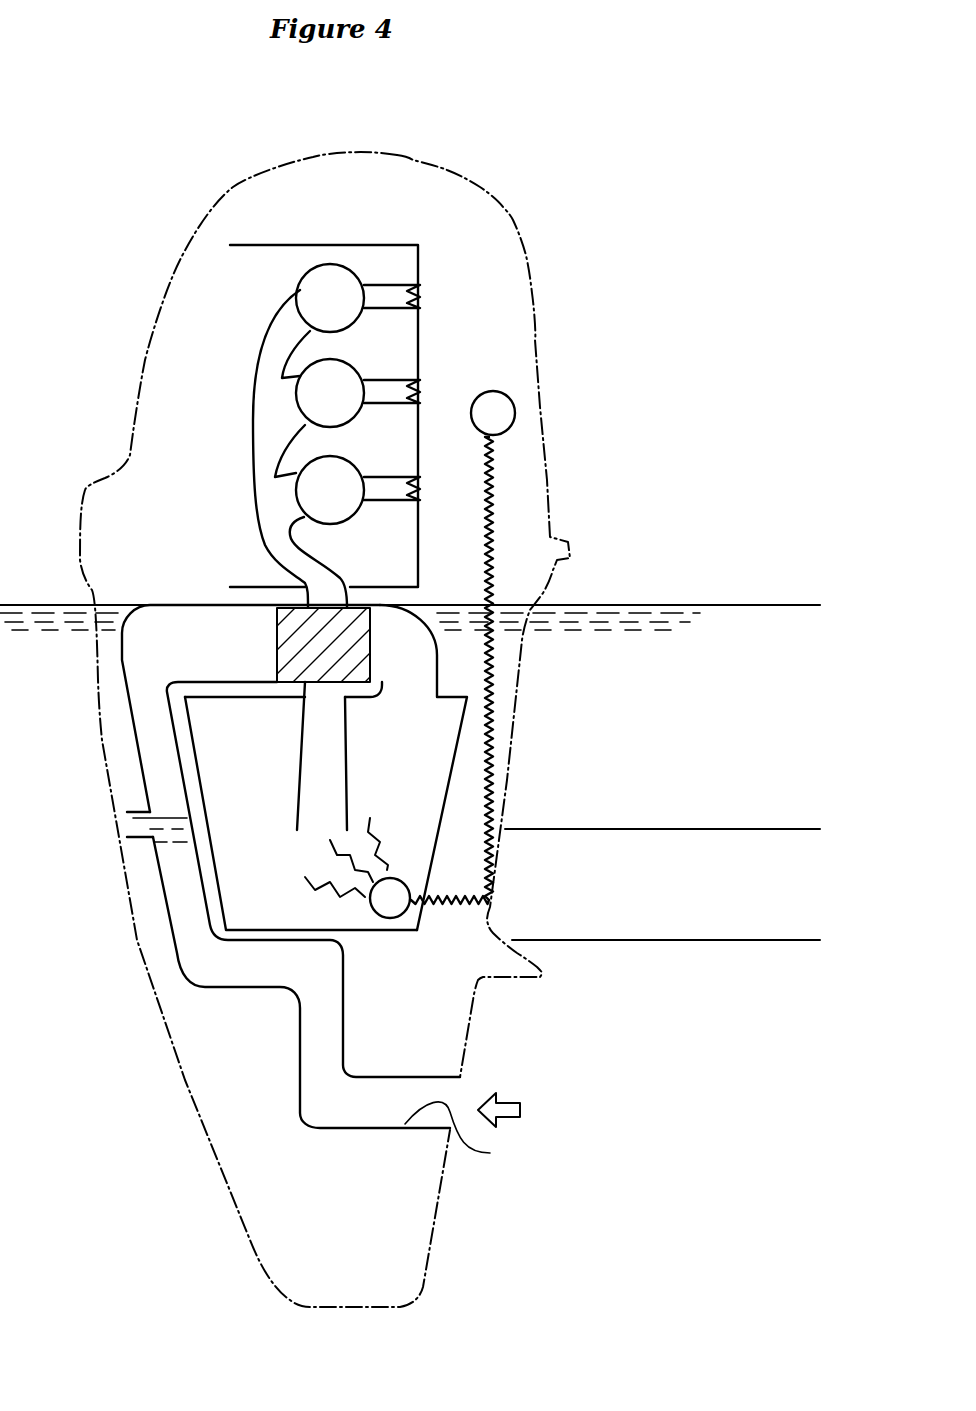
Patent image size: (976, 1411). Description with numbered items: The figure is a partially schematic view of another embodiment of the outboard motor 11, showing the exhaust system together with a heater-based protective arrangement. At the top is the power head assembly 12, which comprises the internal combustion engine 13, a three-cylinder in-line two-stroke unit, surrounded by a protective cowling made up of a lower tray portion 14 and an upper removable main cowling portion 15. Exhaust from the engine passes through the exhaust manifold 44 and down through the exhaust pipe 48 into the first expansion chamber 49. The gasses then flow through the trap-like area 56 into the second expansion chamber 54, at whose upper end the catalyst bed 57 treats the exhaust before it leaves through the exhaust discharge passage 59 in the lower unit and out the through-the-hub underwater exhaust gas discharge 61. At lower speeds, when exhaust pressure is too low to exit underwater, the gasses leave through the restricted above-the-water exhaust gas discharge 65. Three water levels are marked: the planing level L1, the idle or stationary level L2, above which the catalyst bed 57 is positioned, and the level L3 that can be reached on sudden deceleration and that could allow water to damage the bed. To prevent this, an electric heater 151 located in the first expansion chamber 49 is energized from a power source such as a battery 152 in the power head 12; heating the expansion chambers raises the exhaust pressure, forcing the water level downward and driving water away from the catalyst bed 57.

The outboard motor 11 is at (585, 318).
The power head assembly 12 is at (511, 212).
The internal combustion engine 13 is at (330, 243).
The lower tray portion 14 is at (547, 593).
The upper removable main cowling portion 15 is at (397, 155).
The exhaust manifold 44 is at (270, 418).
The exhaust pipe 48 is at (297, 748).
The first expansion chamber 49 is at (427, 774).
The second expansion chamber 54 is at (152, 768).
The trap area 56 is at (420, 672).
The catalyst bed 57 is at (277, 648).
The exhaust discharge passage 59 is at (343, 1003).
The underwater exhaust gas discharge 61 is at (470, 1132).
The above-the-water exhaust gas discharge 65 is at (143, 810).
The electric heater 151 is at (392, 918).
The battery 152 is at (516, 406).
The water level L1 is at (689, 943).
The water level L2 is at (685, 831).
The water level L3 is at (433, 612).